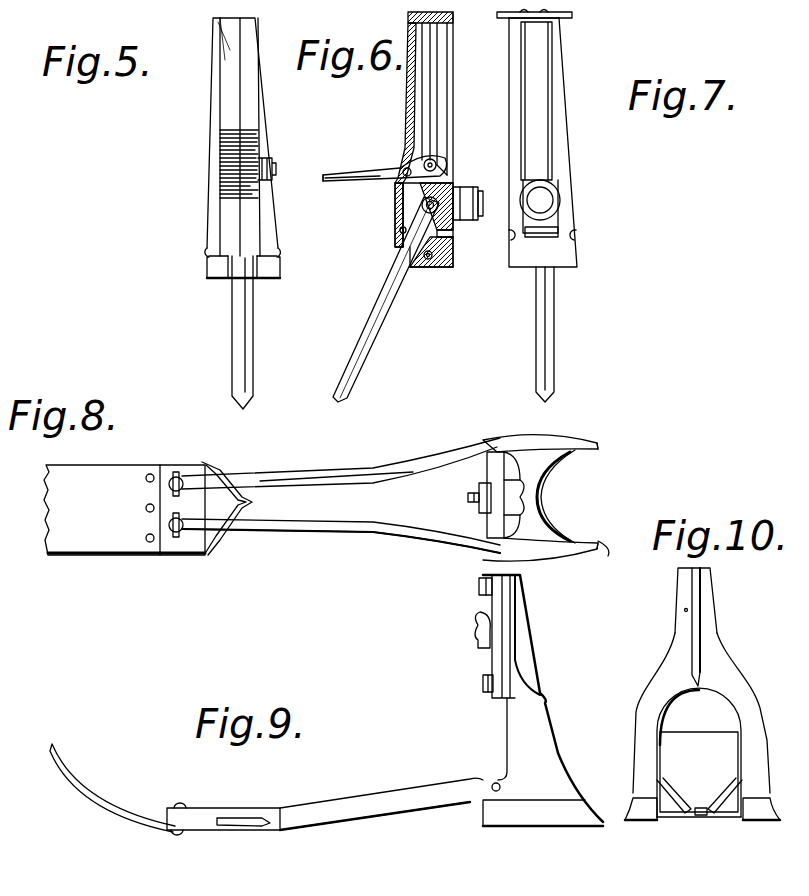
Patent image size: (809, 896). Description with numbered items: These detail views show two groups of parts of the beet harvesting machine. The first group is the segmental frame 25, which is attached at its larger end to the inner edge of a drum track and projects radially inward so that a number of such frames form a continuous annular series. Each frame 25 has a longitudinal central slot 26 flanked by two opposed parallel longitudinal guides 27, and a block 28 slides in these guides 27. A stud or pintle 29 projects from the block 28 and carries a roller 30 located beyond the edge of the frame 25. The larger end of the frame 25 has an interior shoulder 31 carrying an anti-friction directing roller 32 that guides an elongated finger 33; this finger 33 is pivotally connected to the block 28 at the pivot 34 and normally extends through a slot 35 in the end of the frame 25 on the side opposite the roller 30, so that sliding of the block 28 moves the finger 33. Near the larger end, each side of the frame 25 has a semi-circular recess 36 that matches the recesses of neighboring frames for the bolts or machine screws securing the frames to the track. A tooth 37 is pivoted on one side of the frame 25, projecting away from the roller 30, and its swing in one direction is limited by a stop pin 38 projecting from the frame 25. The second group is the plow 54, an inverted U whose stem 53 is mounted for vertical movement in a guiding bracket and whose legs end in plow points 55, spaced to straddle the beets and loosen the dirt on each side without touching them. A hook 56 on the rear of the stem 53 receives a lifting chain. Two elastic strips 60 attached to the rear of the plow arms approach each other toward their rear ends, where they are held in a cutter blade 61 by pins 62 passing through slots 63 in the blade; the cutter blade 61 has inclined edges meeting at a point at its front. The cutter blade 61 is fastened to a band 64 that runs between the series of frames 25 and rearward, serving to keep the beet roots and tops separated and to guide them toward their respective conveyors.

In FIG. 5, the segmental frame 25 is at (212, 144).
In FIG. 6, the segmental frame 25 is at (406, 120).
In FIG. 7, the segmental frame 25 is at (575, 118).
In FIG. 7, the longitudinal central slot 26 is at (538, 38).
In FIG. 6, the longitudinal guide 27 is at (432, 82).
In FIG. 7, the longitudinal guide 27 is at (527, 86).
In FIG. 6, the block 28 is at (425, 215).
In FIG. 7, the block 28 is at (556, 220).
In FIG. 6, the stud or pintle 29 is at (483, 215).
In FIG. 7, the stud or pintle 29 is at (558, 184).
In FIG. 6, the roller 30 is at (470, 188).
In FIG. 7, the roller 30 is at (545, 195).
In FIG. 6, the interior shoulder 31 is at (450, 268).
In FIG. 6, the anti-friction directing roller 32 is at (432, 270).
In FIG. 5, the elongated finger 33 is at (236, 346).
In FIG. 6, the elongated finger 33 is at (372, 326).
In FIG. 7, the elongated finger 33 is at (540, 352).
In FIG. 6, the pivotal connection 34 is at (420, 206).
In FIG. 5, the slot 35 is at (254, 272).
In FIG. 6, the slot 35 is at (418, 265).
In FIG. 5, the semi-circular recess 36 is at (205, 256).
In FIG. 7, the semi-circular recess 36 is at (582, 235).
In FIG. 5, the tooth 37 is at (274, 176).
In FIG. 6, the tooth 37 is at (332, 180).
In FIG. 6, the stop pin 38 is at (380, 178).
In FIG. 8, the stem 53 is at (528, 496).
In FIG. 9, the stem 53 is at (525, 650).
In FIG. 10, the stem 53 is at (706, 604).
In FIG. 8, the plow 54 is at (532, 438).
In FIG. 9, the plow 54 is at (525, 738).
In FIG. 10, the plow 54 is at (640, 725).
In FIG. 8, the plow point 55 is at (602, 545).
In FIG. 9, the plow point 55 is at (520, 816).
In FIG. 10, the plow point 55 is at (758, 812).
In FIG. 8, the hook 56 is at (479, 498).
In FIG. 9, the hook 56 is at (470, 632).
In FIG. 8, the elastic strip 60 is at (370, 540).
In FIG. 9, the elastic strip 60 is at (380, 812).
In FIG. 10, the elastic strip 60 is at (720, 796).
In FIG. 8, the cutter blade 61 is at (204, 465).
In FIG. 9, the cutter blade 61 is at (262, 824).
In FIG. 10, the cutter blade 61 is at (700, 816).
In FIG. 8, the pin 62 is at (168, 486).
In FIG. 9, the pin 62 is at (186, 810).
In FIG. 8, the slot 63 is at (178, 534).
In FIG. 8, the band 64 is at (90, 475).
In FIG. 9, the band 64 is at (112, 790).
In FIG. 10, the band 64 is at (700, 740).